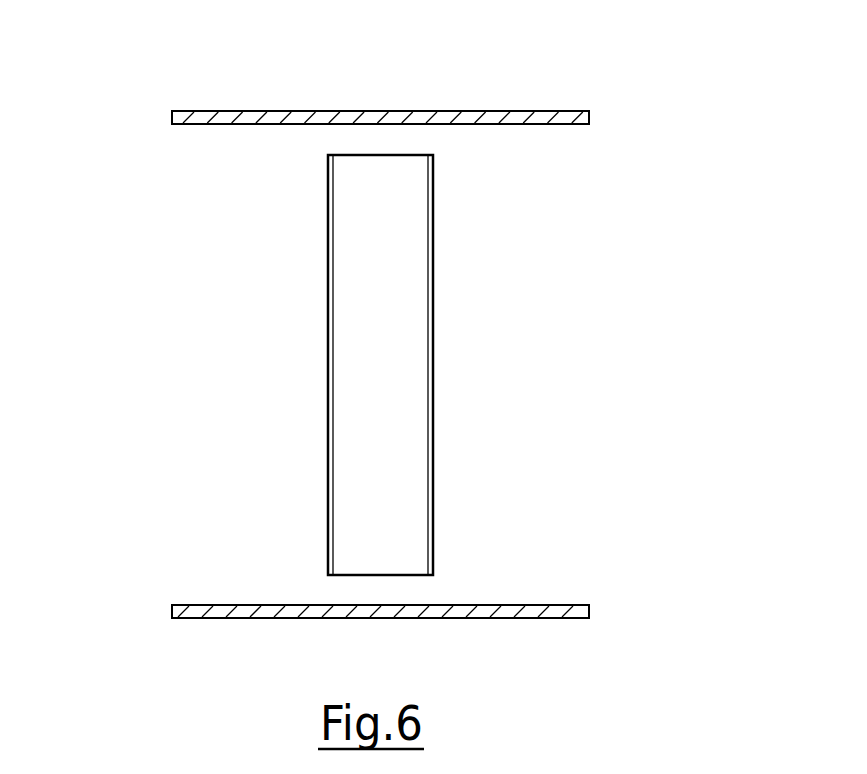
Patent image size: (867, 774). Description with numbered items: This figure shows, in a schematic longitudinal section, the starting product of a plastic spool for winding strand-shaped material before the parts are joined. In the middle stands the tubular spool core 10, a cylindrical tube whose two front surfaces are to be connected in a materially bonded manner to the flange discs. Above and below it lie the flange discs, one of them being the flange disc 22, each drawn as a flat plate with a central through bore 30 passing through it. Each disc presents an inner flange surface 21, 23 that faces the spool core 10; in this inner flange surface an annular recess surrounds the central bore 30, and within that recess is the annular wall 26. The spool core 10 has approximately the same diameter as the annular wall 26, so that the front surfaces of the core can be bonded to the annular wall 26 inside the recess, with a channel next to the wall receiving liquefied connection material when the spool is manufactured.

The spool core 10 is at (357, 367).
The inner flange surface 21 is at (249, 164).
The flange disc 22 is at (566, 72).
The inner flange surface 23 is at (242, 573).
The annular wall 26 is at (455, 570).
The central through bore 30 is at (354, 95).